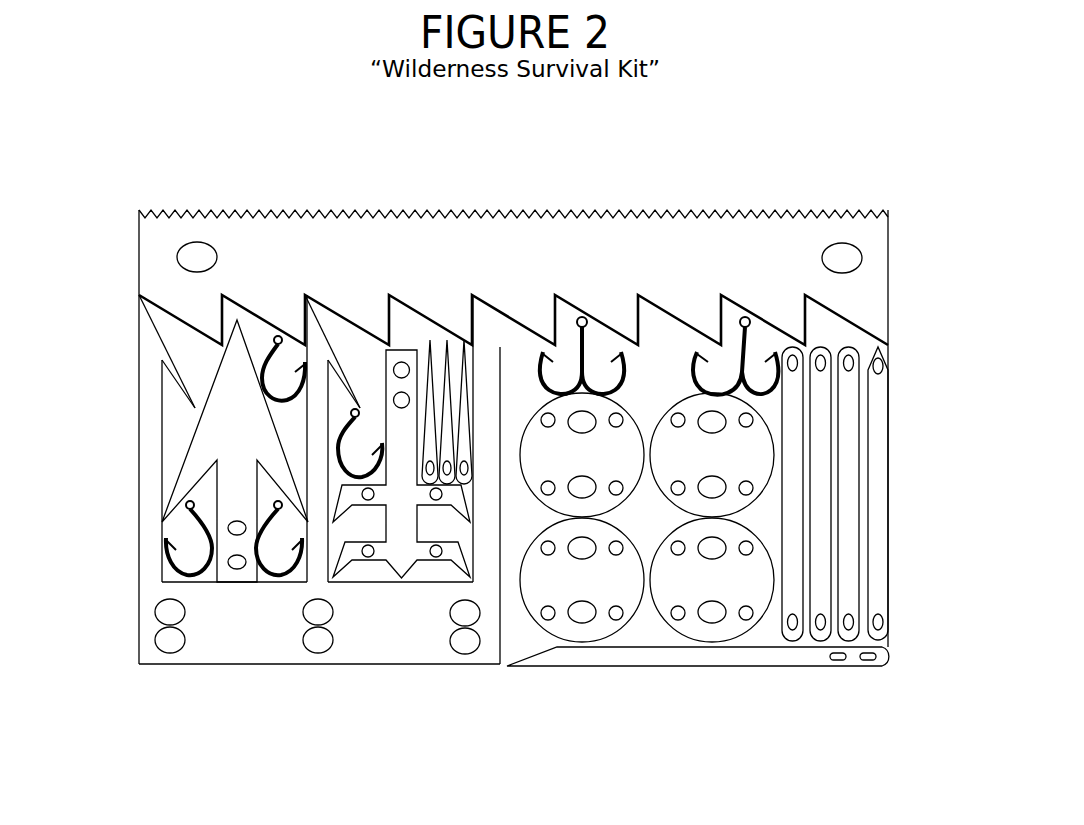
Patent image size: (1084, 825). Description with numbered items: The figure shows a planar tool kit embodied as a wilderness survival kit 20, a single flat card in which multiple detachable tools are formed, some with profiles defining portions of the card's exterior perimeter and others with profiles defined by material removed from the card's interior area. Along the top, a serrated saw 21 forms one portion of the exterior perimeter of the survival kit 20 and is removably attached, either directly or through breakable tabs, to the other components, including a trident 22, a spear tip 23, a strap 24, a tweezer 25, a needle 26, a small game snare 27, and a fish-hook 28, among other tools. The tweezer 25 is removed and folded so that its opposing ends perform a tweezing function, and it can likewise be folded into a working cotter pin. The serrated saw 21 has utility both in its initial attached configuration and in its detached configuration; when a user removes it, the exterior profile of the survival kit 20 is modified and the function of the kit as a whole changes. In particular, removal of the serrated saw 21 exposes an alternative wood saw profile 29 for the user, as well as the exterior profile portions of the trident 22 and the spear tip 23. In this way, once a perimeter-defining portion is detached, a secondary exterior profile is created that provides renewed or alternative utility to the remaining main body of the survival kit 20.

The survival kit 20 is at (857, 92).
The serrated saw 21 is at (245, 210).
The trident 22 is at (252, 643).
The spear tip 23 is at (236, 364).
The strap 24 is at (822, 392).
The tweezer 25 is at (878, 517).
The needle 26 is at (446, 447).
The small game snare 27 is at (402, 540).
The fish-hook 28 is at (733, 332).
The wood saw profile 29 is at (440, 297).